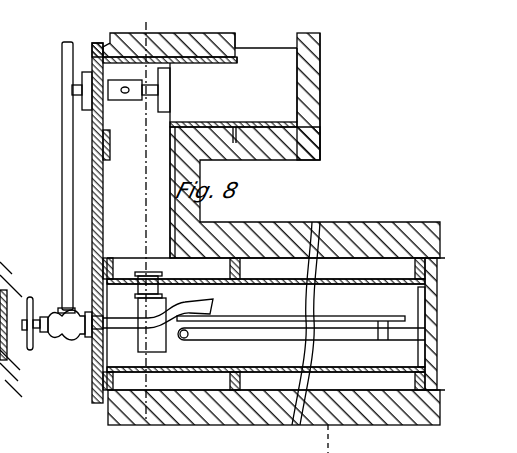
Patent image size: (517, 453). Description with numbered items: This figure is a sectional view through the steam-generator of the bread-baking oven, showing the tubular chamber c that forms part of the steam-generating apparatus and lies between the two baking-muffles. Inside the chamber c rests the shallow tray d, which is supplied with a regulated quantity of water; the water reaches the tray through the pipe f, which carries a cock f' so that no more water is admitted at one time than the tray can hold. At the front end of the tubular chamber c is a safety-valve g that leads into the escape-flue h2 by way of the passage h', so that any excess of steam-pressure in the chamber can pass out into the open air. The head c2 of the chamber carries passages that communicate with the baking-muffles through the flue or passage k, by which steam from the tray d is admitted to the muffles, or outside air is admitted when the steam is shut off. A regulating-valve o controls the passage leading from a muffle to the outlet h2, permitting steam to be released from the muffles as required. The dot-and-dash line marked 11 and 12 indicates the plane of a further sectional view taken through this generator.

The tubular chamber c is at (222, 229).
The head c2 is at (92, 377).
The shallow tray d is at (301, 321).
The pipe f is at (128, 185).
The cock f' is at (57, 332).
The safety-valve g is at (150, 312).
The passage h' is at (131, 224).
The escape-flue h2 is at (269, 40).
The flue or passage k is at (131, 160).
The regulating-valve o is at (121, 90).
The section line 11 is at (149, 76).
The section line 12 is at (145, 296).